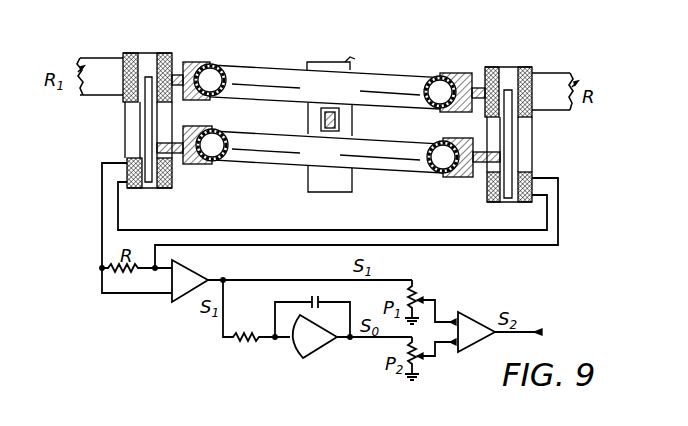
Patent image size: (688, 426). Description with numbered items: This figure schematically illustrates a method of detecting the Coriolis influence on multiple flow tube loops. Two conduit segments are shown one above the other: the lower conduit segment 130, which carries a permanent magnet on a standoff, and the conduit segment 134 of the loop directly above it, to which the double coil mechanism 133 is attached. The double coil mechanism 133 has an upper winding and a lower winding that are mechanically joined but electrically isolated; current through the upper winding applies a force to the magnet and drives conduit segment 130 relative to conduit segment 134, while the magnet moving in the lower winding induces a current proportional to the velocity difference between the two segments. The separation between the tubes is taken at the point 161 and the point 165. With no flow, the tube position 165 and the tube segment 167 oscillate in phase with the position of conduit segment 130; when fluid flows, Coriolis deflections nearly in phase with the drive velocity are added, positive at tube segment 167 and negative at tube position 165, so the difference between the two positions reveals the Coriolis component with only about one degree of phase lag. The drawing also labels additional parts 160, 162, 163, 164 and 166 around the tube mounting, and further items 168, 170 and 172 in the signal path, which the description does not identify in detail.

The conduit segment 130 is at (318, 157).
The double coil mechanism 133 is at (348, 57).
The conduit segment 134 is at (330, 82).
The left bearing housing 160 is at (165, 53).
The point 161 is at (215, 66).
The right bearing housing 162 is at (528, 68).
The ball bearing 163 is at (462, 43).
The lower left housing block 164 is at (163, 190).
The tube position 165 is at (217, 132).
The lower right housing block 166 is at (486, 181).
The tube segment 167 is at (421, 176).
The amplifier 168 is at (187, 293).
The differential amplifier 170 is at (474, 345).
The integrator 172 is at (322, 347).